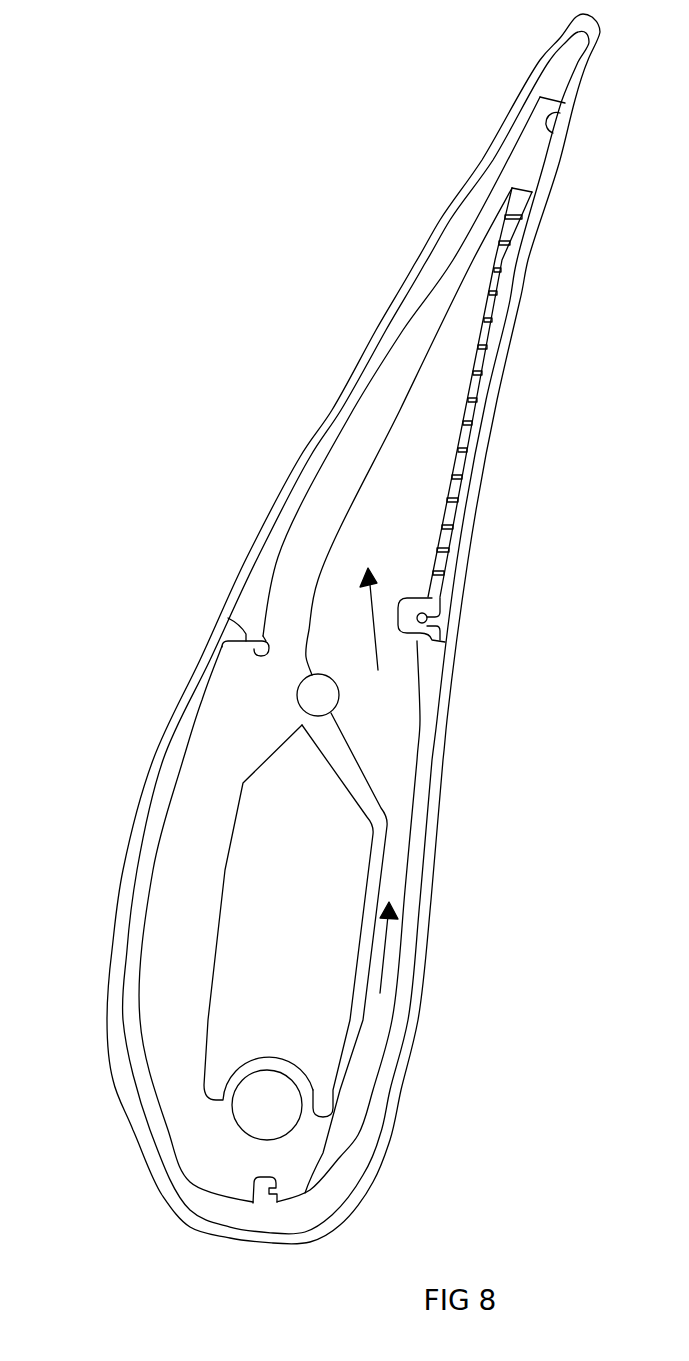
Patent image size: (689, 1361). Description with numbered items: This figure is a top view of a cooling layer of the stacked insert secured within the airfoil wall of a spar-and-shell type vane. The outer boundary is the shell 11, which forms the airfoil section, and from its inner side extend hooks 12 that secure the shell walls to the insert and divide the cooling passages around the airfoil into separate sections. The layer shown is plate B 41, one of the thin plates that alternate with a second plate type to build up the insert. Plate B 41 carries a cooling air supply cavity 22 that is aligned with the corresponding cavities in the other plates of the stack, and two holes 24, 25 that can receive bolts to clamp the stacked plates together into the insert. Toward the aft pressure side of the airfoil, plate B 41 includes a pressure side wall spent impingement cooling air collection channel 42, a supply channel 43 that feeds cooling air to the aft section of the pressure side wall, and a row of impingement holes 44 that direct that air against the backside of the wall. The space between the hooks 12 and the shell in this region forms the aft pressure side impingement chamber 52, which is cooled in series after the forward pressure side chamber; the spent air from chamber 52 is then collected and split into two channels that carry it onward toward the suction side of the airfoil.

The shell 11 is at (118, 1082).
The hooks 12 is at (230, 637).
The cooling air supply cavity 22 is at (270, 953).
The hole 24 is at (265, 1103).
The hole 25 is at (318, 694).
The plate B 41 is at (190, 880).
The pressure side wall spent impingement cooling air collection channel 42 is at (393, 885).
The supply channel 43 is at (383, 523).
The row of impingement holes 44 is at (483, 318).
The aft pressure side impingement chamber 52 is at (462, 481).